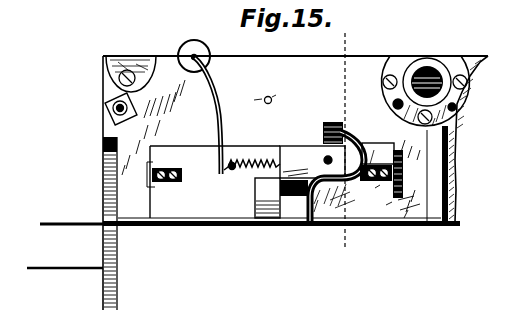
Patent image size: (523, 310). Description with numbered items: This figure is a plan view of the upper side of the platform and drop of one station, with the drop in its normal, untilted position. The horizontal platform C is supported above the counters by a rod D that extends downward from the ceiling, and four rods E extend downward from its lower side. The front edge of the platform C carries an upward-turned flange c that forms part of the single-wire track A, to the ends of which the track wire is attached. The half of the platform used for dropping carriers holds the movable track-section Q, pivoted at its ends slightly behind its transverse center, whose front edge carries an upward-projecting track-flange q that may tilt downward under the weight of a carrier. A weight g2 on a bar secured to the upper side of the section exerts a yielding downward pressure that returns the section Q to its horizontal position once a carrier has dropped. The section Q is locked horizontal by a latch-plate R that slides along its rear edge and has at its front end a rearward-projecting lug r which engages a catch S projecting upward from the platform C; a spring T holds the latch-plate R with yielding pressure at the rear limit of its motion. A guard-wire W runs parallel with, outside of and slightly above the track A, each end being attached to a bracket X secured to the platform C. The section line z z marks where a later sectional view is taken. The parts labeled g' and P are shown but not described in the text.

The single-wire track A is at (71, 216).
The guard-wire W is at (65, 278).
The bracket X is at (123, 261).
The rods E is at (110, 112).
The flange g2 is at (210, 55).
The arm g' is at (205, 116).
The horizontal platform C is at (278, 92).
The upward-turned flange c is at (414, 237).
The spring T is at (252, 158).
The movable track-section Q is at (272, 190).
The latch-plate R is at (312, 162).
The catch S is at (324, 133).
The rearward-projecting lug r is at (350, 132).
The lever P is at (300, 198).
The rod D is at (160, 173).
The track-flange q is at (238, 228).
The section line z is at (342, 143).